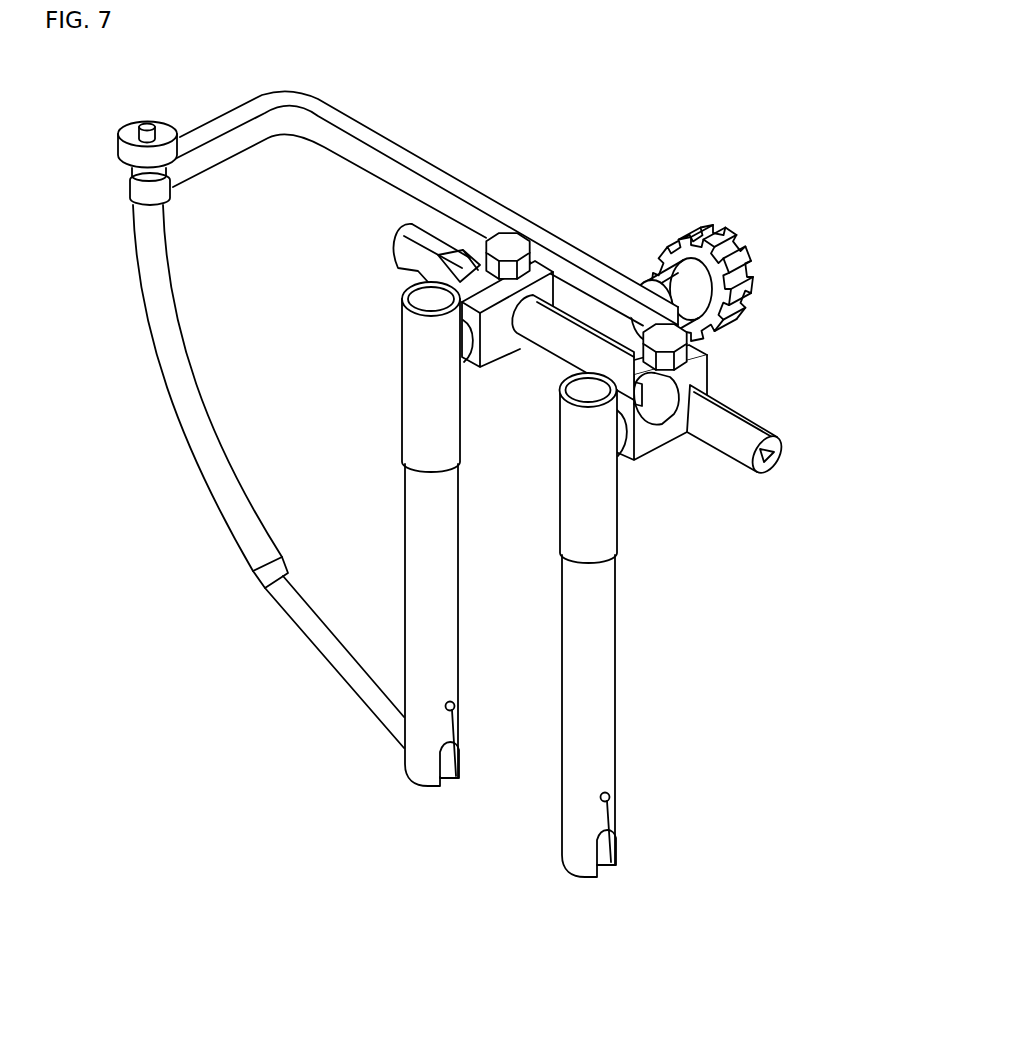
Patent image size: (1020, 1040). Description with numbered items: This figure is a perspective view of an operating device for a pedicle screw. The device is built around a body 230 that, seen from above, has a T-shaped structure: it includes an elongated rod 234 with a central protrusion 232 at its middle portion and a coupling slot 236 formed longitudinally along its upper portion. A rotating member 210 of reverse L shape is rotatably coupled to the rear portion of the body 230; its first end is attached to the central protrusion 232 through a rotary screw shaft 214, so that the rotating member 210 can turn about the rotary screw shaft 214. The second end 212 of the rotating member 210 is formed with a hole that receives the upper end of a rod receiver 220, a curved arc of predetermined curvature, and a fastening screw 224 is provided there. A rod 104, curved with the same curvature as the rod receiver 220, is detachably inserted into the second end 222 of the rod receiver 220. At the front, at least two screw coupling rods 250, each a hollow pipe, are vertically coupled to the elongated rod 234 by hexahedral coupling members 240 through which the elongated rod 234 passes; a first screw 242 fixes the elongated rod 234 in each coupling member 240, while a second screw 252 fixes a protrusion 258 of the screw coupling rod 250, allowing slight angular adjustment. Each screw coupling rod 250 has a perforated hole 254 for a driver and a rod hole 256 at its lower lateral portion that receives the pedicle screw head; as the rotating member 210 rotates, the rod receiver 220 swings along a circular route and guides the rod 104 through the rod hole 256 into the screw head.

The rod 104 is at (335, 667).
The rotating member 210 is at (484, 196).
The second end 212 is at (137, 194).
The rotary screw shaft 214 is at (736, 267).
The rod receiver 220 is at (192, 450).
The second end 222 is at (268, 575).
The fastening screw 224 is at (128, 143).
The body 230 is at (705, 411).
The central protrusion 232 is at (620, 316).
The elongated rod 234 is at (742, 452).
The coupling slot 236 is at (766, 422).
The coupling member 240 is at (548, 266).
The first screw 242 is at (516, 244).
The screw coupling rod 250 is at (410, 428).
The second screw 252 is at (420, 275).
The perforated hole 254 is at (426, 301).
The rod hole 256 is at (450, 746).
The protrusion 258 is at (466, 336).